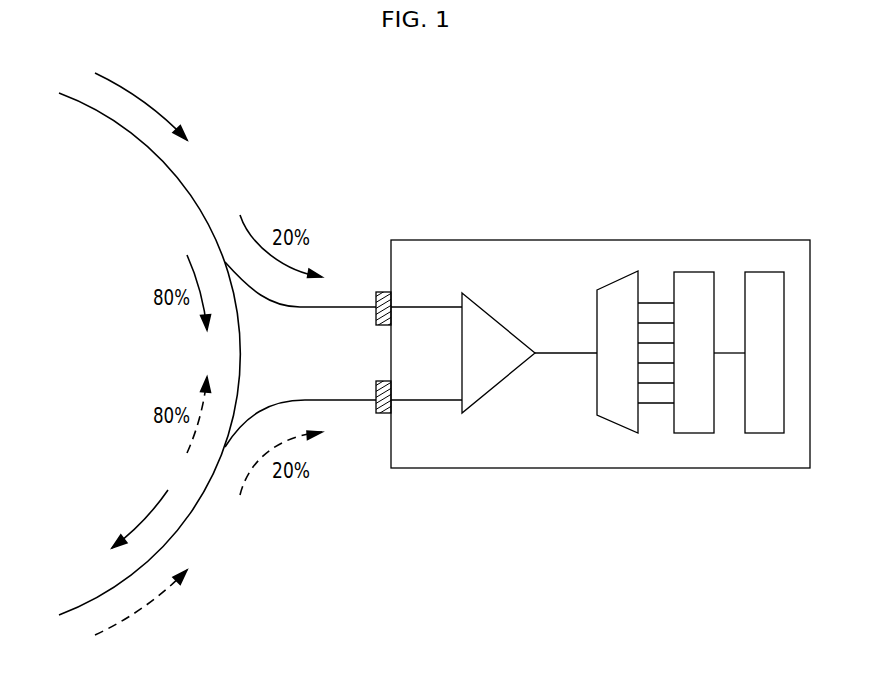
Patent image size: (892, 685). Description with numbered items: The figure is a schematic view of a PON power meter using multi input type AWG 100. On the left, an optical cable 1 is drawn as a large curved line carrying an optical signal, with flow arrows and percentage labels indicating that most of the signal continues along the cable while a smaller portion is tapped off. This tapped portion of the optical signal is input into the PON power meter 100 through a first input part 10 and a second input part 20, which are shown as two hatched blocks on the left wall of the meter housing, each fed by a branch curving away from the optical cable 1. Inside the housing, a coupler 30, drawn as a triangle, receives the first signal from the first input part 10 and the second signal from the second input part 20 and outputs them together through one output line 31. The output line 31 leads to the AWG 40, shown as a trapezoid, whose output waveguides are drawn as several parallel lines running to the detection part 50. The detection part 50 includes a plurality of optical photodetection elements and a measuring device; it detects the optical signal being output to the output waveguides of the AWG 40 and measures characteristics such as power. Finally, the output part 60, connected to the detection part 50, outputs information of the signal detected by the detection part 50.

The optical cable 1 is at (190, 190).
The first input part 10 is at (376, 292).
The second input part 20 is at (376, 413).
The coupler 30 is at (497, 320).
The output line 31 is at (565, 350).
The AWG 40 is at (612, 284).
The detection part 50 is at (700, 272).
The output part 60 is at (766, 272).
The PON power meter using multi input type AWG 100 is at (433, 240).